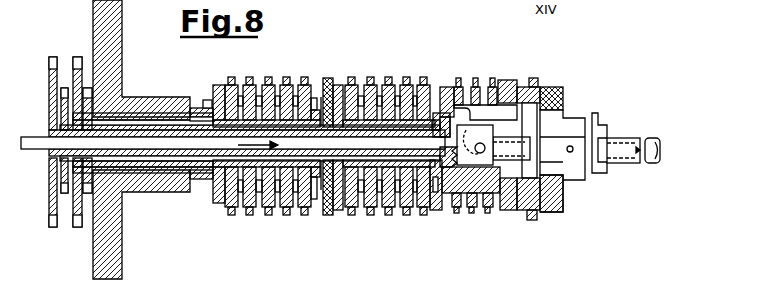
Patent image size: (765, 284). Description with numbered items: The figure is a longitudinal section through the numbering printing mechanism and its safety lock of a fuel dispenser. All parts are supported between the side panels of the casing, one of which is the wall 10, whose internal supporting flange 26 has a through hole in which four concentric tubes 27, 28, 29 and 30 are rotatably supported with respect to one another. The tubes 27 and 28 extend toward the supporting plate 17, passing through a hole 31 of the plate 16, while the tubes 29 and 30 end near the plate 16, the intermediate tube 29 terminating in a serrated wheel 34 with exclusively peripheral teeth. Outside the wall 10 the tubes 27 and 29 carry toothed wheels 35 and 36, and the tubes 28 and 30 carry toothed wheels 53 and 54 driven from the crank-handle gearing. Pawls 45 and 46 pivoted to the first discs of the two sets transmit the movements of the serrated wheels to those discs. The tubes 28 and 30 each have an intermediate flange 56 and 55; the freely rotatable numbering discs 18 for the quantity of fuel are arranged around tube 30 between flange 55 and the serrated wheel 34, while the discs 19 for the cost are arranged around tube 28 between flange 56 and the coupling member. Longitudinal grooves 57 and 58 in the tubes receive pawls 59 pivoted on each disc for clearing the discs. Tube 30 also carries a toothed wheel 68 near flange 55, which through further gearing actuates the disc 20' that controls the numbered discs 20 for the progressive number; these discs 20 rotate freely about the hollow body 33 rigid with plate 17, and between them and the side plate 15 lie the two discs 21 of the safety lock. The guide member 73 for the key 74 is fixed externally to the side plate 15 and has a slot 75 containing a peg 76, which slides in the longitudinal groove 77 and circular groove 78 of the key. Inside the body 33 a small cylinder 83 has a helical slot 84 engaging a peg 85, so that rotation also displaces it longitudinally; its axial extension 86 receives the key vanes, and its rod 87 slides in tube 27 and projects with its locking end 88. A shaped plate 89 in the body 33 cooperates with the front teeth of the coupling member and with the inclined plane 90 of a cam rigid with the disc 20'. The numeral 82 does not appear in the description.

The side panel 10 is at (78, 11).
The side plate 15 is at (550, 90).
The plate 16 is at (328, 78).
The supporting plate 17 is at (440, 113).
The numbering discs 18 is at (288, 77).
The numbering discs 19 is at (405, 77).
The numbered discs 20 is at (475, 71).
The disc 20' is at (516, 226).
The discs 21 is at (533, 78).
The supporting flange 26 is at (128, 103).
The internal tube 27 is at (142, 192).
The tube 28 is at (167, 192).
The intermediate tube 29 is at (183, 192).
The tube 30 is at (207, 192).
The hole 31 is at (321, 100).
The body 33 is at (485, 213).
The serrated wheel 34 is at (312, 97).
The toothed wheel 35 is at (50, 82).
The toothed wheel 36 is at (78, 62).
The pawl 45 is at (312, 200).
The pawl 46 is at (432, 213).
The toothed wheel 53 is at (58, 194).
The toothed wheel 54 is at (88, 194).
The flange 55 is at (200, 105).
The flange 56 is at (338, 85).
The longitudinal grooves 57 is at (222, 85).
The longitudinal grooves 58 is at (373, 217).
The pawls 59 is at (206, 100).
The toothed wheel 68 is at (200, 110).
The guide member 73 is at (563, 212).
The key 74 is at (650, 140).
The slot 75 is at (563, 145).
The peg 76 is at (573, 151).
The longitudinal groove 77 is at (618, 150).
The circular groove 78 is at (640, 168).
The sleeve 82 is at (438, 118).
The small cylinder 83 is at (489, 125).
The slot 84 is at (465, 173).
The peg 85 is at (517, 218).
The axial extension 86 is at (568, 188).
The rod 87 is at (233, 180).
The end 88 is at (37, 137).
The shaped plate 89 is at (457, 80).
The inclined plane 90 is at (532, 216).